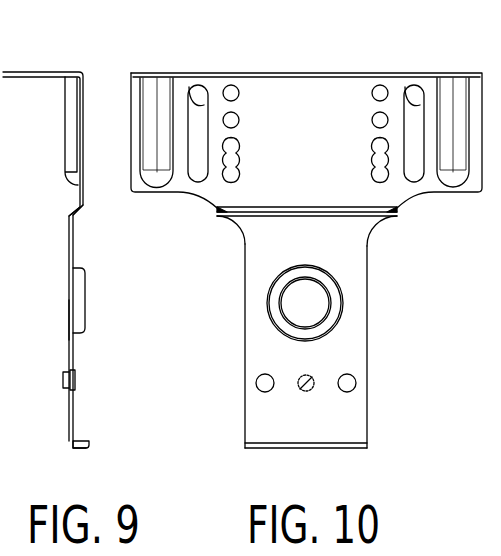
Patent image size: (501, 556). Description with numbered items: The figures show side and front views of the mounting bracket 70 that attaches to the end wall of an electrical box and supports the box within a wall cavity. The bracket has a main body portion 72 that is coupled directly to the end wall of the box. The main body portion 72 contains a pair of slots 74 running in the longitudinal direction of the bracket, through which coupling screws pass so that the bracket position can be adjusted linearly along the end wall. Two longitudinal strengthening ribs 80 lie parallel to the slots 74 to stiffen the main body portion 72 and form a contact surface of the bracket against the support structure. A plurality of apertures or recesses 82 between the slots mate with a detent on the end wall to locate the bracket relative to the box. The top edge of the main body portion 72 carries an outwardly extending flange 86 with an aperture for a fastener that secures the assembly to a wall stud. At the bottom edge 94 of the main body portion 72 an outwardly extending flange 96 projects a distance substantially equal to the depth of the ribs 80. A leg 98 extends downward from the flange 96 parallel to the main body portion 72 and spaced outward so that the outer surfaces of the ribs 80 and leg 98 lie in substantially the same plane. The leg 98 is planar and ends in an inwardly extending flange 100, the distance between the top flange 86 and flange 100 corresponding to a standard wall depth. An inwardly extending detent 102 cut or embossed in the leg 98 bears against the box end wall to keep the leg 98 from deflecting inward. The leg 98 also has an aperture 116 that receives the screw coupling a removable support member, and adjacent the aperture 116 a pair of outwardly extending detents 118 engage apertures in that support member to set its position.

In FIG. 9, the mounting bracket 70 is at (80, 224).
In FIG. 10, the mounting bracket 70 is at (306, 243).
In FIG. 10, the main body portion 72 is at (306, 104).
In FIG. 10, the slots 74 is at (196, 85).
In FIG. 9, the strengthening ribs 80 is at (71, 131).
In FIG. 10, the strengthening ribs 80 is at (165, 95).
In FIG. 10, the apertures or recesses 82 is at (234, 123).
In FIG. 10, the outwardly extending flange 86 is at (258, 73).
In FIG. 9, the bottom edge 94 is at (84, 207).
In FIG. 10, the bottom edge 94 is at (217, 212).
In FIG. 9, the outwardly extending flange 96 is at (62, 207).
In FIG. 10, the outwardly extending flange 96 is at (332, 209).
In FIG. 9, the leg 98 is at (66, 343).
In FIG. 10, the leg 98 is at (342, 355).
In FIG. 9, the inwardly extending flange 100 is at (82, 441).
In FIG. 10, the inwardly extending flange 100 is at (327, 448).
In FIG. 9, the detent 102 is at (83, 305).
In FIG. 10, the detent 102 is at (337, 302).
In FIG. 10, the aperture 116 is at (305, 392).
In FIG. 9, the detents 118 is at (62, 386).
In FIG. 10, the detents 118 is at (256, 383).